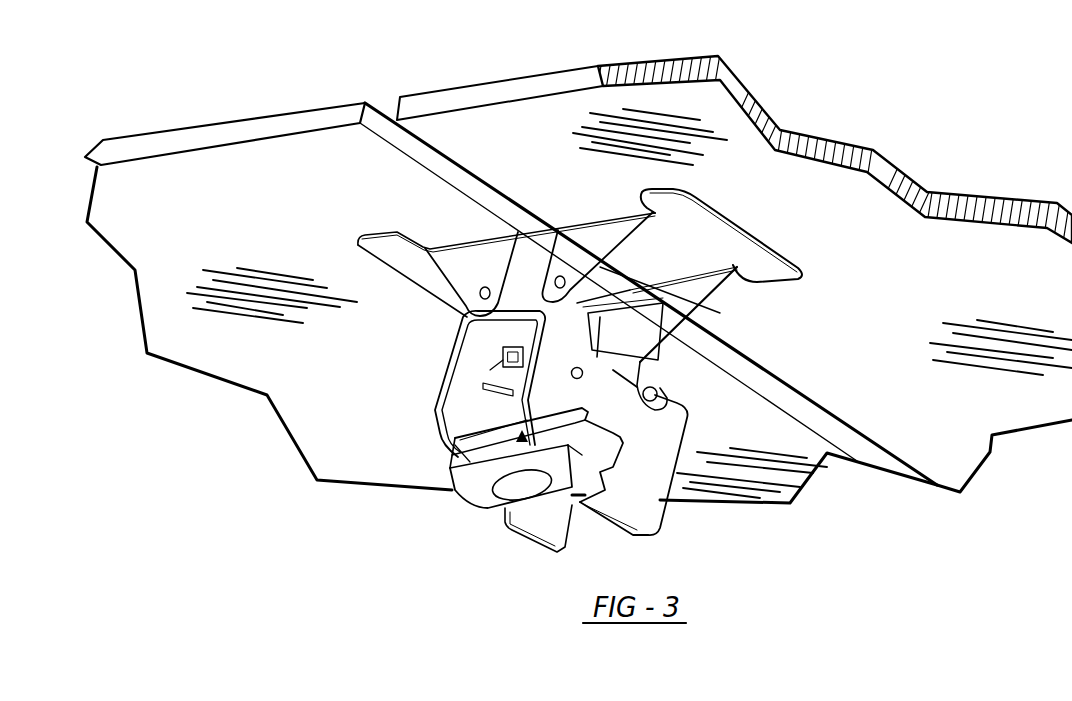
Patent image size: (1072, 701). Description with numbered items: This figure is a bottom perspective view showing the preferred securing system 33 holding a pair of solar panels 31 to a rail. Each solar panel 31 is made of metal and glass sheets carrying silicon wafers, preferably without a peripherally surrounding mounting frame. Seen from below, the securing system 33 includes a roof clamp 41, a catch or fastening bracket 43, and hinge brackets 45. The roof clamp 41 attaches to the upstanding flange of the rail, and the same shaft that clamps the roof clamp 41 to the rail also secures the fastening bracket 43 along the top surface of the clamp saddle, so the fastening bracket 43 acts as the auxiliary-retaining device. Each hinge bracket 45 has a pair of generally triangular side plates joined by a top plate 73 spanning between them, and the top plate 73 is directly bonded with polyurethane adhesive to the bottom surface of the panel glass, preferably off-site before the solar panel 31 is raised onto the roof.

The solar panel 31 is at (231, 221).
The securing system 33 is at (458, 511).
The roof clamp 41 is at (460, 405).
The fastening bracket 43 is at (578, 300).
The hinge bracket 45 is at (472, 258).
The top plate 73 is at (723, 237).